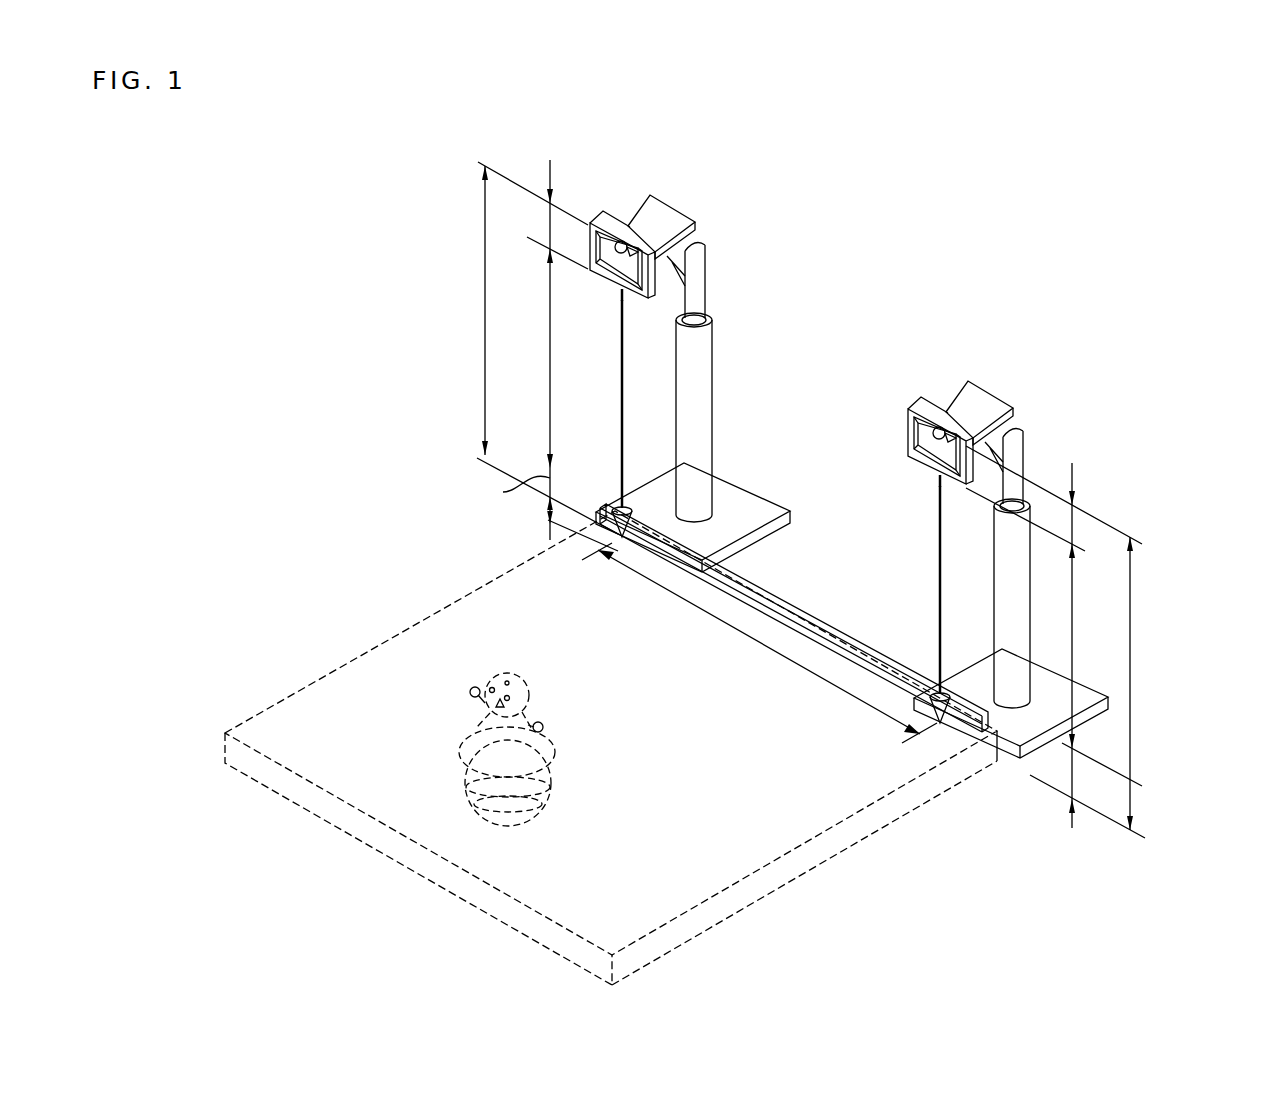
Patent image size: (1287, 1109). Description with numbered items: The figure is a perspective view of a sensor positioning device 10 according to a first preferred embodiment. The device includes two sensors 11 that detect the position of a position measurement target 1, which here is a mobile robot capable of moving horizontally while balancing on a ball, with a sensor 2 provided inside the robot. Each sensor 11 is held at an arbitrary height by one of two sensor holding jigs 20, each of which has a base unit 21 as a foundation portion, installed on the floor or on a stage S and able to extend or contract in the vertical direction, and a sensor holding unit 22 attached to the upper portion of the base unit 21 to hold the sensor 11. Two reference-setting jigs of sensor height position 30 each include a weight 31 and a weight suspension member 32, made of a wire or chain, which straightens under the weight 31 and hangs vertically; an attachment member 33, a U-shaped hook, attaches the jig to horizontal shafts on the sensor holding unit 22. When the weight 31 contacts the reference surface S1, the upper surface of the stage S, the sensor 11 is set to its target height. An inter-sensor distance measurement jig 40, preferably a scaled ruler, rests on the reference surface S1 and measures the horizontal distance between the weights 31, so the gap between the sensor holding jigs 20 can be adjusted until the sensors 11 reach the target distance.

The position measurement target 1 is at (477, 727).
The sensor 2 is at (503, 677).
The sensor positioning device 10 is at (198, 241).
The sensor 11 is at (588, 224).
The sensor holding jig 20 is at (935, 448).
The base unit 21 is at (706, 297).
The sensor holding unit 22 is at (672, 208).
The reference-setting jig of sensor height position 30 is at (852, 523).
The weight 31 is at (653, 487).
The weight suspension member 32 is at (623, 410).
The attachment member 33 is at (650, 302).
The inter-sensor distance measurement jig 40 is at (695, 577).
The stage S is at (773, 892).
The reference surface S1 is at (790, 807).